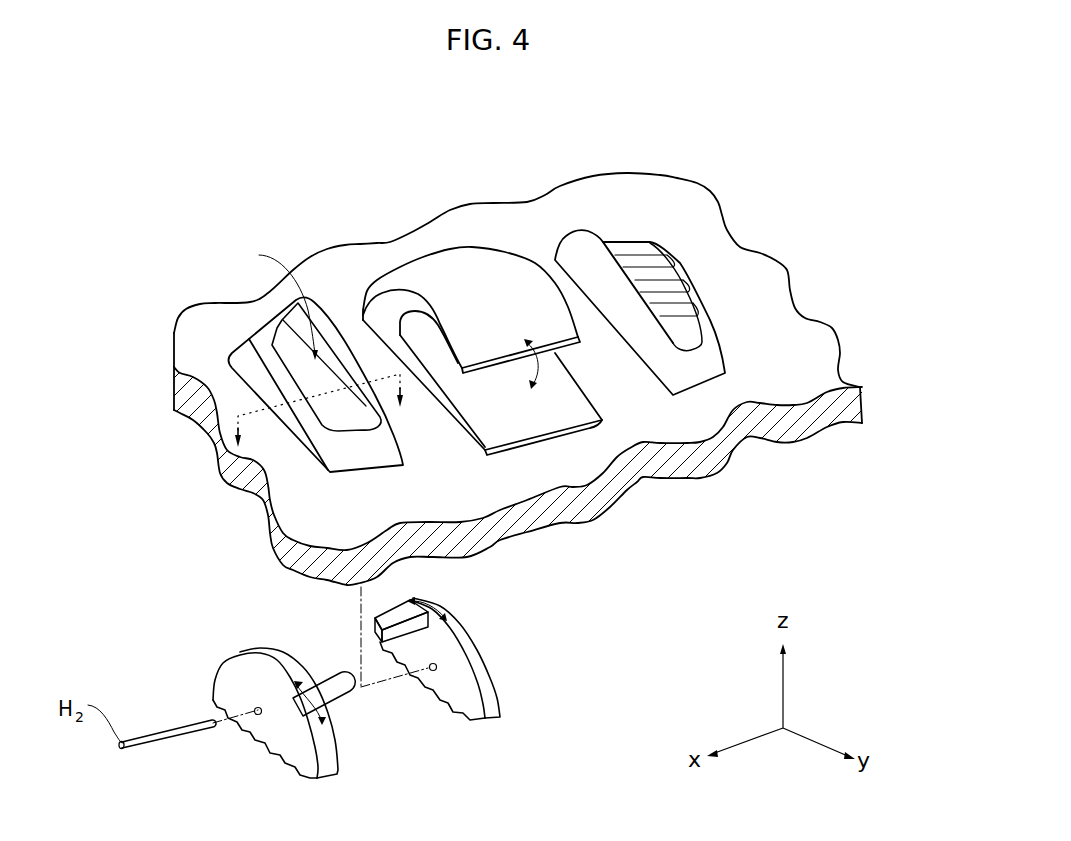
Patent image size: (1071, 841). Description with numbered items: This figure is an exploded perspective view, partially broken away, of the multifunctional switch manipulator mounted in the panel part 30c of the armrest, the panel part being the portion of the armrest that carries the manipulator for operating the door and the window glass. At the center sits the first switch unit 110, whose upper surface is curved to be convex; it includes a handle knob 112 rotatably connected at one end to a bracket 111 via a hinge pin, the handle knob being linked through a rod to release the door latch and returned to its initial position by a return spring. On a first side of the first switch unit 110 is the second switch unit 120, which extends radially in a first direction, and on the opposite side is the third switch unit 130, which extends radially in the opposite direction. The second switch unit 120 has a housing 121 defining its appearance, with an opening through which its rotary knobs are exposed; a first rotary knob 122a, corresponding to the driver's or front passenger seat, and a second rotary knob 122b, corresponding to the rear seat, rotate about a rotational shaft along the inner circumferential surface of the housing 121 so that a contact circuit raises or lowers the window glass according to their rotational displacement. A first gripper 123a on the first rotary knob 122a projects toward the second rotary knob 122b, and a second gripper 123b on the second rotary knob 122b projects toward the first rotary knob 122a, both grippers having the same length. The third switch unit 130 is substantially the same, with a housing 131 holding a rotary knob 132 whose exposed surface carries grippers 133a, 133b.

The panel part 30c is at (820, 325).
The first switch unit 110 is at (521, 327).
The bracket 111 is at (513, 418).
The handle knob 112 is at (472, 290).
The second switch unit 120 is at (329, 372).
The housing 121 is at (247, 363).
The first rotary knob 122a is at (470, 645).
The second rotary knob 122b is at (308, 696).
The first gripper 123a is at (413, 625).
The second gripper 123b is at (330, 682).
The third switch unit 130 is at (654, 266).
The housing 131 is at (588, 257).
The rotary knob 132 is at (699, 244).
The first gripper 133a is at (660, 242).
The second gripper 133b is at (682, 293).